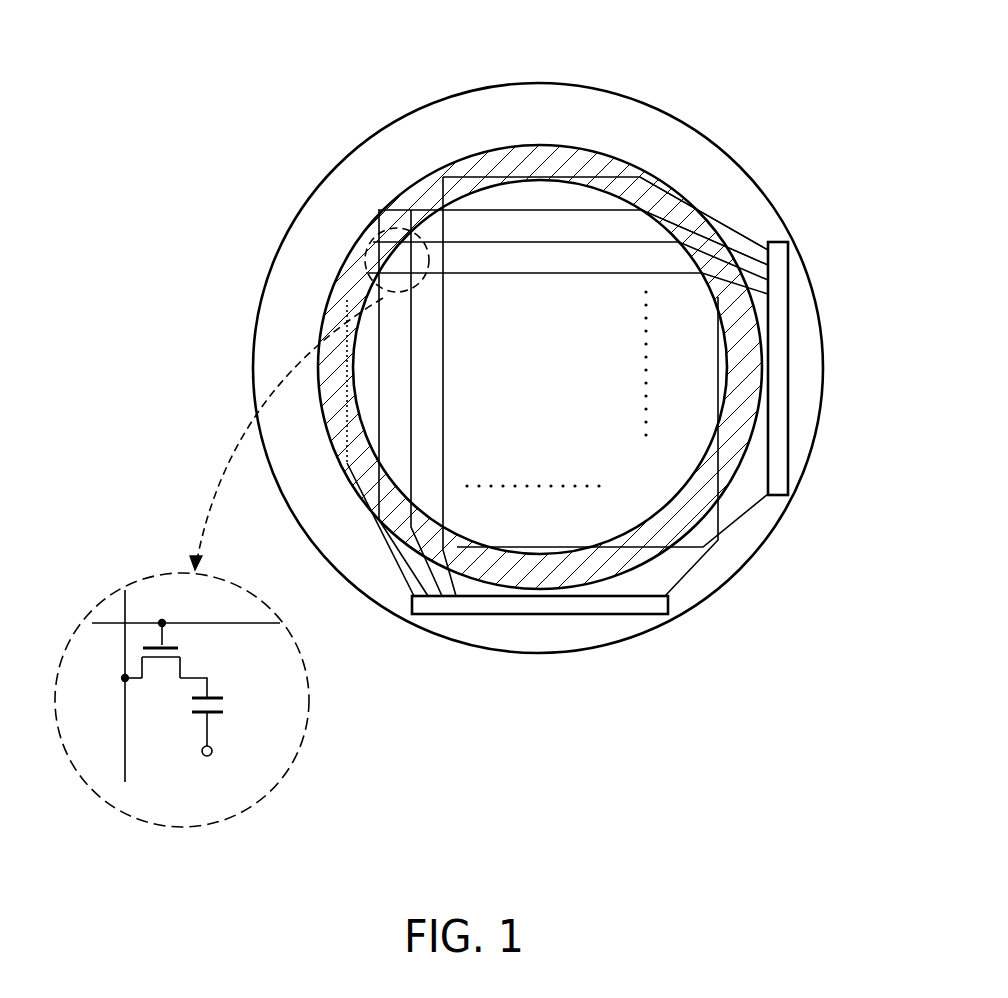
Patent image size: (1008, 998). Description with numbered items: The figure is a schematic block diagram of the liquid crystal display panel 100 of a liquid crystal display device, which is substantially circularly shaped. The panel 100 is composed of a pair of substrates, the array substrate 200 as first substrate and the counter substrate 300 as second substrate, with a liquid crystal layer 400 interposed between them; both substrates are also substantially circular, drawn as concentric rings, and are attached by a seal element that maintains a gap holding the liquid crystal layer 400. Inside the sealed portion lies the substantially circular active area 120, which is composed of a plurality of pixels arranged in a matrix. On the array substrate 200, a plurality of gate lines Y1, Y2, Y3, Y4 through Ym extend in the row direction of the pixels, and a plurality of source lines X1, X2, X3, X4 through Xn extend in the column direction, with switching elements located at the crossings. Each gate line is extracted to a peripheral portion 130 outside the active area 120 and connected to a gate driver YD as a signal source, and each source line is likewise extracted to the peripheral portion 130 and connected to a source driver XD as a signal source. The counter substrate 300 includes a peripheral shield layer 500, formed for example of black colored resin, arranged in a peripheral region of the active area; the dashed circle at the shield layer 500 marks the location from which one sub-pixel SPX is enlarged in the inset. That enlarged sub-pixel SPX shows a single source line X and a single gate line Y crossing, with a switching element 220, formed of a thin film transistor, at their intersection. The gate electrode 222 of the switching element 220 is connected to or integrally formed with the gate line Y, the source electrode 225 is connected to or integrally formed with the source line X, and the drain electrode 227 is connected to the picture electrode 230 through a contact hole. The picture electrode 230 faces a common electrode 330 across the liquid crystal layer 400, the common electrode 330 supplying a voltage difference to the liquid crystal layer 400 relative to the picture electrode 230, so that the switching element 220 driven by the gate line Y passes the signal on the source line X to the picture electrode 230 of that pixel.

The liquid crystal display panel 100 is at (630, 77).
The array substrate 200 is at (693, 130).
The counter substrate 300 is at (526, 145).
The active area 120 is at (470, 186).
The peripheral shield layer 500 is at (393, 226).
The peripheral portion 130 is at (741, 225).
The gate driver YD is at (789, 367).
The source driver XD is at (610, 616).
The gate line Y1 is at (505, 180).
The gate line Y2 is at (537, 212).
The gate line Y3 is at (570, 244).
The gate line Y4 is at (607, 275).
The gate line Ym is at (612, 520).
The source line X1 is at (348, 372).
The source line X2 is at (380, 398).
The source line X3 is at (412, 428).
The source line X4 is at (444, 457).
The source line Xn is at (717, 362).
The sub-pixel SPX is at (182, 737).
The source line X is at (124, 739).
The gate line Y is at (203, 622).
The switching element 220 is at (184, 654).
The gate electrode 222 is at (158, 639).
The source electrode 225 is at (123, 681).
The drain electrode 227 is at (187, 683).
The picture electrode 230 is at (218, 697).
The liquid crystal layer 400 is at (218, 705).
The common electrode 330 is at (217, 716).